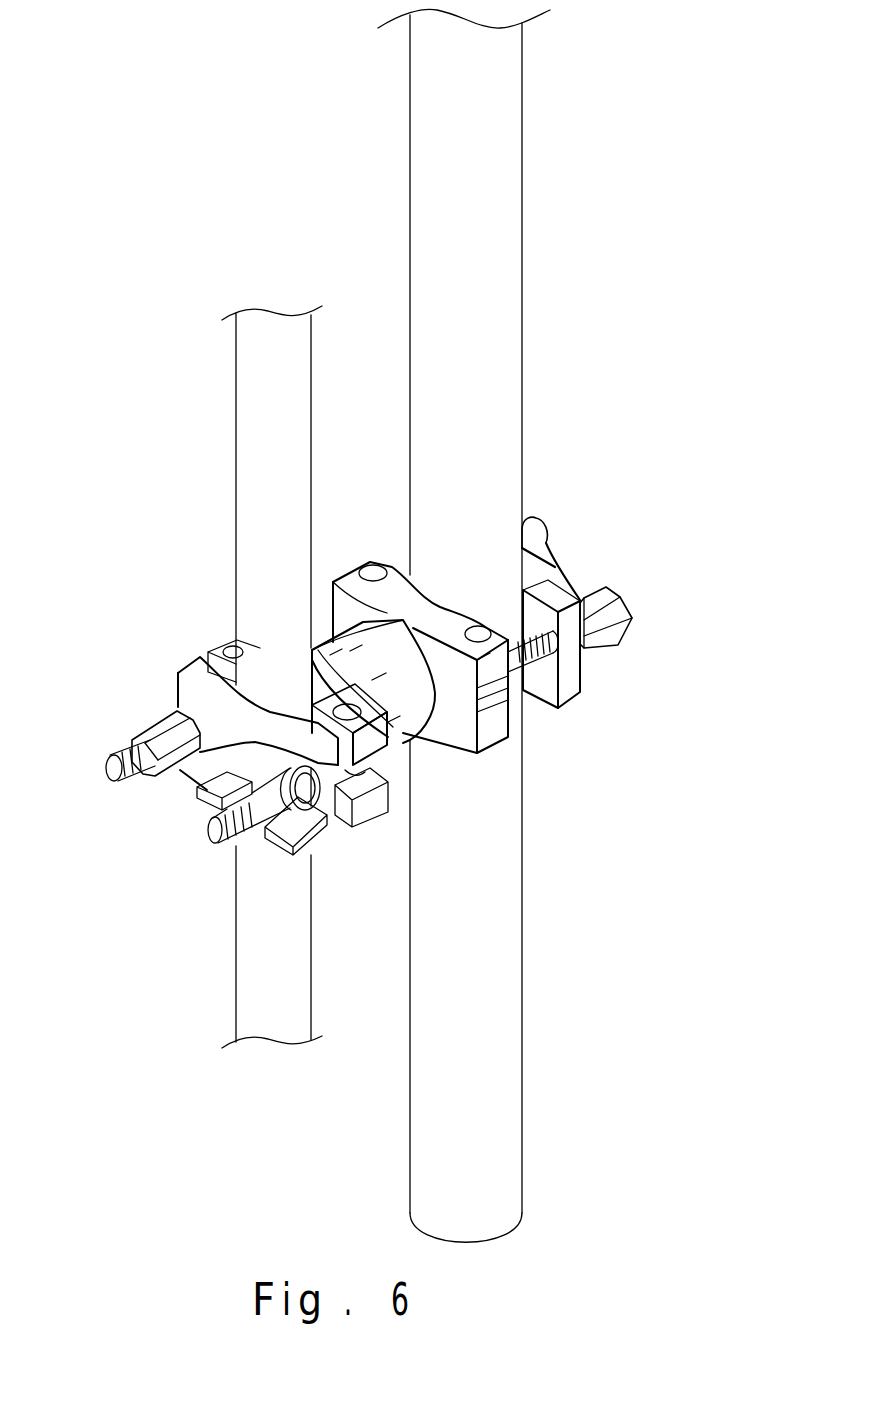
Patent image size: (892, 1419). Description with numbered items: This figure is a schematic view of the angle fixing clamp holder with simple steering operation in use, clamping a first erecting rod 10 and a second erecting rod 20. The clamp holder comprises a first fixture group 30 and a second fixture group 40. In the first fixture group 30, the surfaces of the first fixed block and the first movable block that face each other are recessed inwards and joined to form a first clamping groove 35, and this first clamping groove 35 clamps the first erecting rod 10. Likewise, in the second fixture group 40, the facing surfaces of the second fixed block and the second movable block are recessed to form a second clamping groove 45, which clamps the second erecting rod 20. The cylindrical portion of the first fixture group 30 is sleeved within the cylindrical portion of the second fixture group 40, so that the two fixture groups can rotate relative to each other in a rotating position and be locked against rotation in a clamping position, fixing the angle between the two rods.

The first erecting rod 10 is at (500, 345).
The second erecting rod 20 is at (248, 442).
The first fixture group 30 is at (592, 690).
The first clamping groove 35 is at (523, 588).
The second fixture group 40 is at (180, 670).
The second clamping groove 45 is at (277, 708).